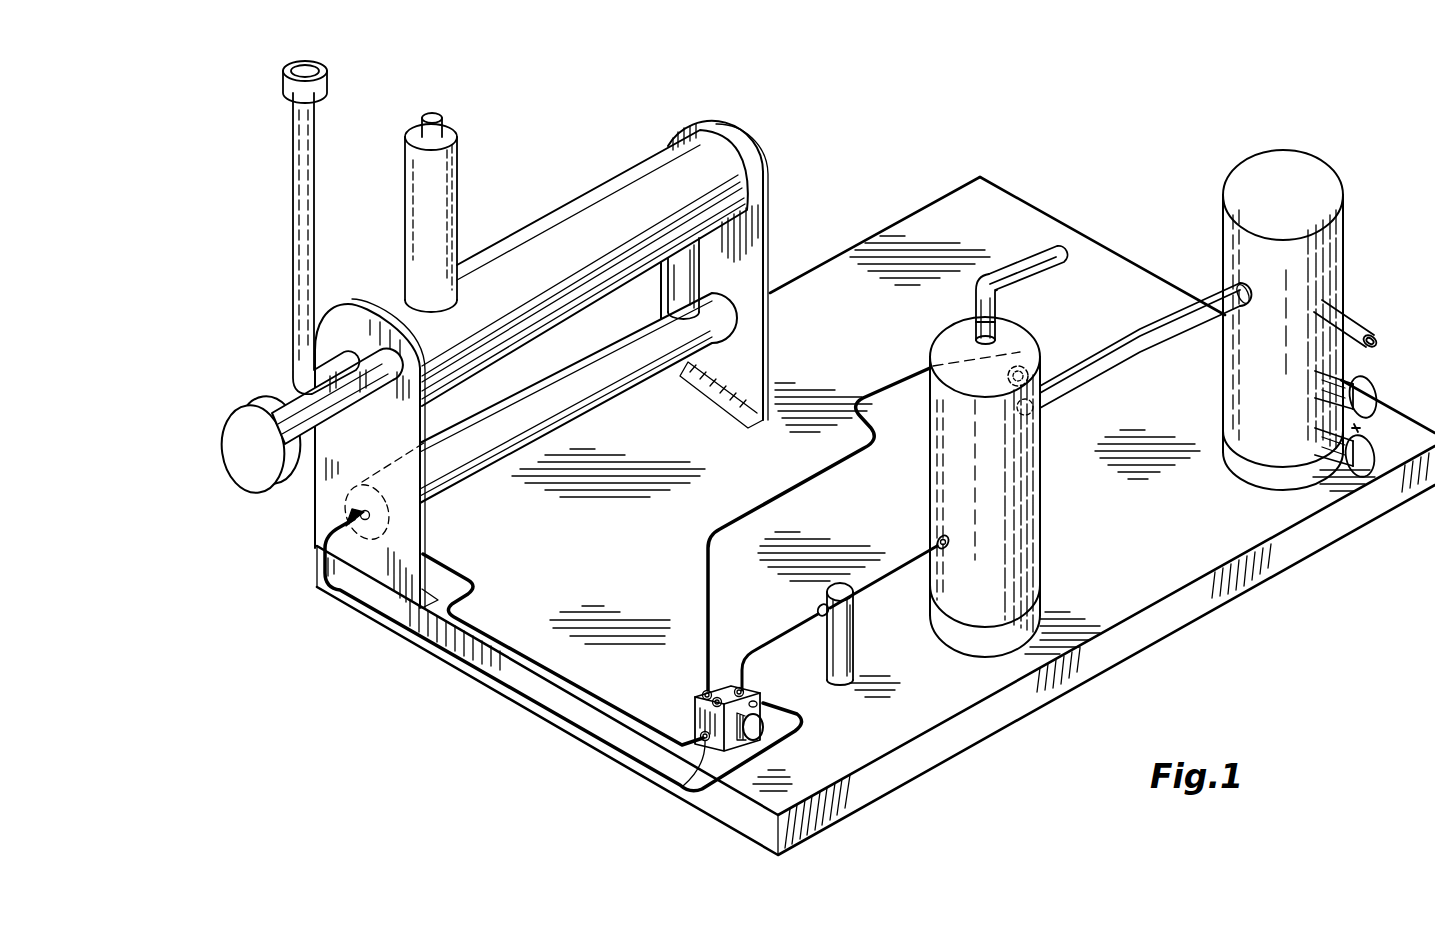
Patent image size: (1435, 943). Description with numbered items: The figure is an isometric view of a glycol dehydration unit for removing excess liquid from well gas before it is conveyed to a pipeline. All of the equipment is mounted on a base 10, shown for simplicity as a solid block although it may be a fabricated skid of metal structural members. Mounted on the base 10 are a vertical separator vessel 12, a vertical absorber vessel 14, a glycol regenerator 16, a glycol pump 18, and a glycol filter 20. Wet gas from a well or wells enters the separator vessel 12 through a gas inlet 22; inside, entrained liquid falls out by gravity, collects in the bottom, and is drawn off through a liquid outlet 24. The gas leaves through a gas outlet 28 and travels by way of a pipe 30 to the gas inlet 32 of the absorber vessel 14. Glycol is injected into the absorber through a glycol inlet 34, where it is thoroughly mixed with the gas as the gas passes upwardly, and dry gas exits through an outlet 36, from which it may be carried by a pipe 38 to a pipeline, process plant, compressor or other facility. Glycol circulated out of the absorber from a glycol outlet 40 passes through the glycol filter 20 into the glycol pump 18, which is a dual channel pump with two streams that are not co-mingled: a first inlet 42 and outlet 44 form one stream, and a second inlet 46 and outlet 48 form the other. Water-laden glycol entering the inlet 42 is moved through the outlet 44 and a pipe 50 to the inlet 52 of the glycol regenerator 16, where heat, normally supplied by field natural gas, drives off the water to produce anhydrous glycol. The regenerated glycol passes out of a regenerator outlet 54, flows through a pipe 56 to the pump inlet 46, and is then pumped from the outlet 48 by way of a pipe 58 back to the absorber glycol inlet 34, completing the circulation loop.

The base 10 is at (969, 749).
The vertical separator vessel 12 is at (1320, 266).
The vertical absorber vessel 14 is at (1020, 492).
The glycol regenerator 16 is at (570, 160).
The glycol pump 18 is at (697, 722).
The glycol filter 20 is at (853, 640).
The gas inlet 22 is at (1332, 304).
The liquid outlet 24 is at (1345, 458).
The gas outlet 28 is at (1226, 284).
The pipe 30 is at (1140, 338).
The gas inlet 32 is at (1034, 408).
The glycol inlet 34 is at (1033, 367).
The outlet 36 is at (975, 333).
The pipe 38 is at (1042, 250).
The glycol outlet 40 is at (946, 537).
The inlet 42 is at (744, 688).
The outlet 44 is at (768, 706).
The inlet 46 is at (682, 787).
The outlet 48 is at (702, 692).
The pipe 50 is at (590, 735).
The inlet 52 is at (364, 510).
The regenerator outlet 54 is at (406, 536).
The pipe 56 is at (548, 670).
The pipe 58 is at (757, 504).